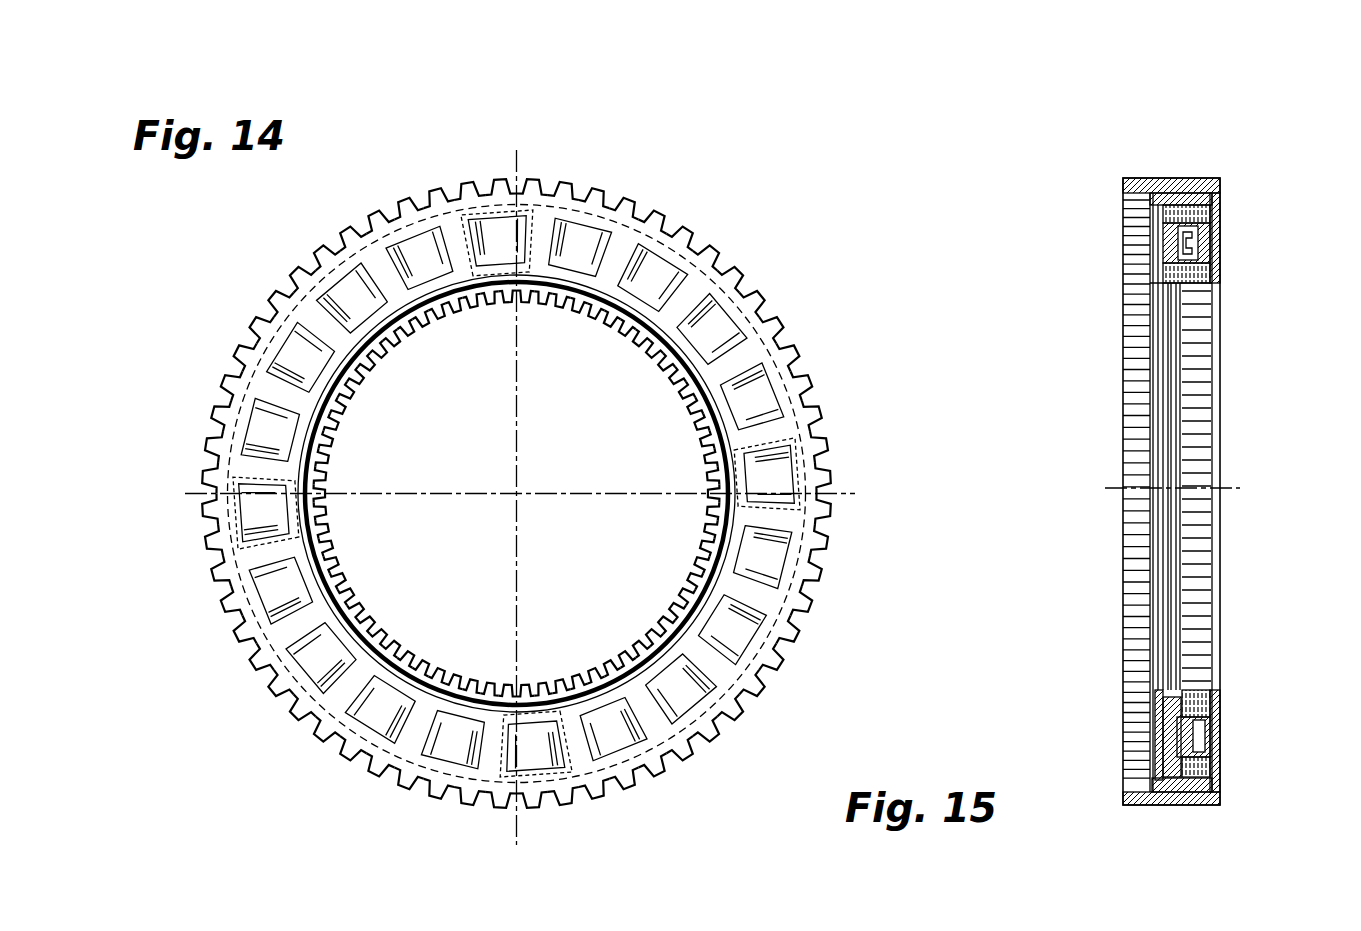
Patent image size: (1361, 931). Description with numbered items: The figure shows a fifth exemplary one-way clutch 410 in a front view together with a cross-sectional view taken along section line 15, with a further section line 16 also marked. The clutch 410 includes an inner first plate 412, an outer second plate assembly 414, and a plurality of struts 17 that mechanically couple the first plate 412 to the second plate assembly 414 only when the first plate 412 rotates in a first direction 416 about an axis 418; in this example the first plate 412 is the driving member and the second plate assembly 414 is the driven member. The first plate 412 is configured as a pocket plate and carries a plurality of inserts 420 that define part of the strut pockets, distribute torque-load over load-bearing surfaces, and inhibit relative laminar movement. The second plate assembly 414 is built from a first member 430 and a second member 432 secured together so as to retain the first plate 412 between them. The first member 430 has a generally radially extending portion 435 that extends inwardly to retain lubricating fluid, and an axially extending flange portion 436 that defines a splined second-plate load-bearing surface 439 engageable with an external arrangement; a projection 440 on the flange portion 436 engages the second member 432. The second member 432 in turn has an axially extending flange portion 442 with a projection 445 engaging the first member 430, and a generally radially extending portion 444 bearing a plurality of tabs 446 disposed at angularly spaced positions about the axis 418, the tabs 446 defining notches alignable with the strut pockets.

In FIG. 14, the one-way clutch 410 is at (677, 183).
In FIG. 15, the one-way clutch 410 is at (1250, 165).
In FIG. 14, the first plate 412 is at (514, 505).
In FIG. 15, the first plate 412 is at (1222, 618).
In FIG. 14, the second plate assembly 414 is at (788, 312).
In FIG. 15, the second plate assembly 414 is at (1242, 800).
In FIG. 14, the first direction 416 is at (470, 108).
In FIG. 14, the axis 418 is at (512, 490).
In FIG. 15, the inserts 420 is at (1213, 730).
In FIG. 15, the first member 430 is at (1222, 187).
In FIG. 15, the second member 432 is at (1152, 764).
In FIG. 15, the radially extending portion 435 is at (1222, 242).
In FIG. 14, the flange portion 436 is at (828, 505).
In FIG. 15, the flange portion 436 is at (1172, 198).
In FIG. 15, the second-plate load-bearing surface 439 is at (1134, 178).
In FIG. 15, the projection 440 is at (1150, 208).
In FIG. 15, the flange portion 442 is at (1182, 790).
In FIG. 15, the radially extending portion 444 is at (1156, 705).
In FIG. 15, the projection 445 is at (1188, 196).
In FIG. 14, the tabs 446 is at (668, 257).
In FIG. 14, the section line 15— 15 is at (516, 148).
In FIG. 14, the section line 16— 16 is at (760, 437).
In FIG. 15, the struts 17 is at (1160, 238).